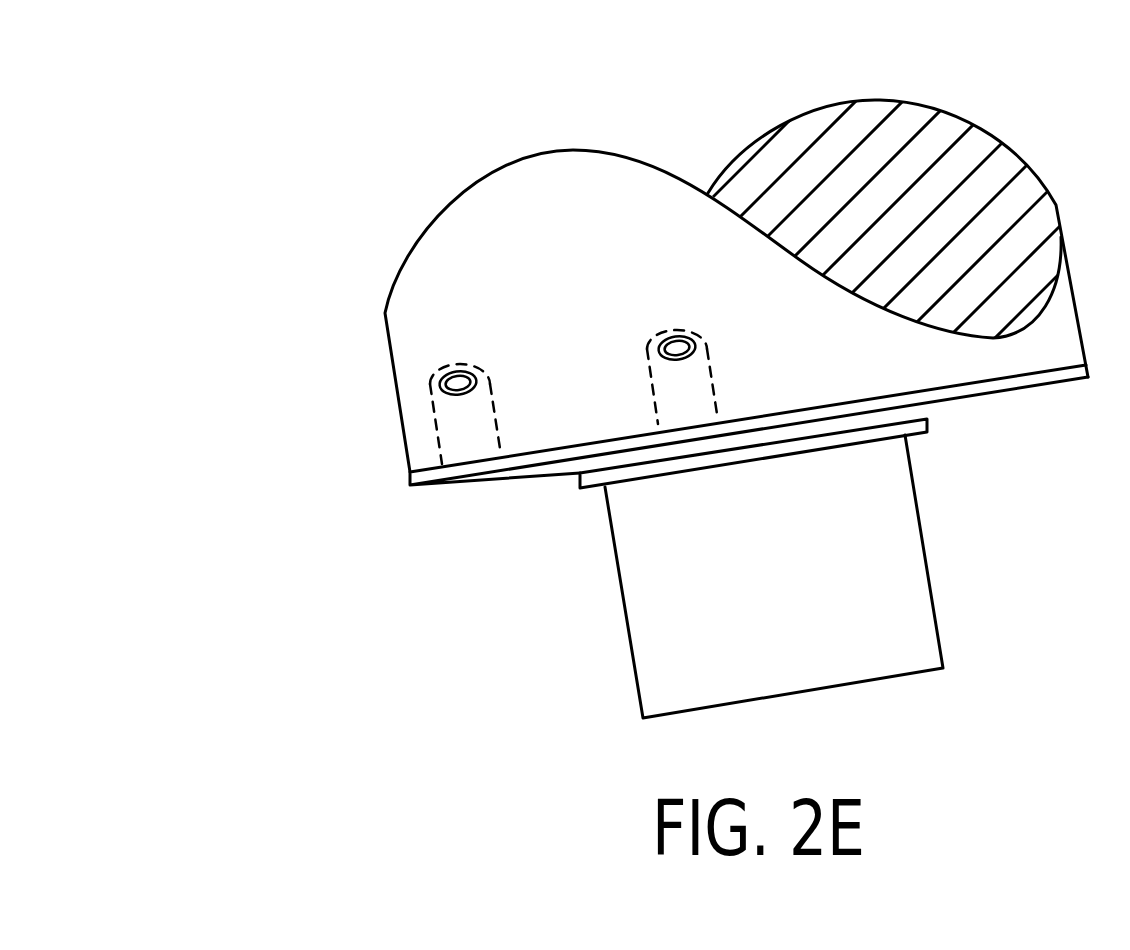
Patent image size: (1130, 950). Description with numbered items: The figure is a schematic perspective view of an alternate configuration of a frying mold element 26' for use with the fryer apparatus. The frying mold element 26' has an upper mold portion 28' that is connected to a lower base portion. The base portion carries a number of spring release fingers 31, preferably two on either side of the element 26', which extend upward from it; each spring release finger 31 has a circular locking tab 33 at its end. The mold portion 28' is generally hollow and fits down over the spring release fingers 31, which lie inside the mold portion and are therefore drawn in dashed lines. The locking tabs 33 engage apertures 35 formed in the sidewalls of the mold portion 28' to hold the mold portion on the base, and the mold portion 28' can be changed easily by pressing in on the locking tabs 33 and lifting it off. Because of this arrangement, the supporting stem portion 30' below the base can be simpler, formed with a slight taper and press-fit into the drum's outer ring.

The frying mold element 26' is at (622, 389).
The mold portion 28' is at (754, 266).
The supporting stem portion 30' is at (801, 568).
The spring release fingers 31 is at (482, 421).
The circular locking tab 33 is at (460, 380).
The apertures 35 is at (486, 377).